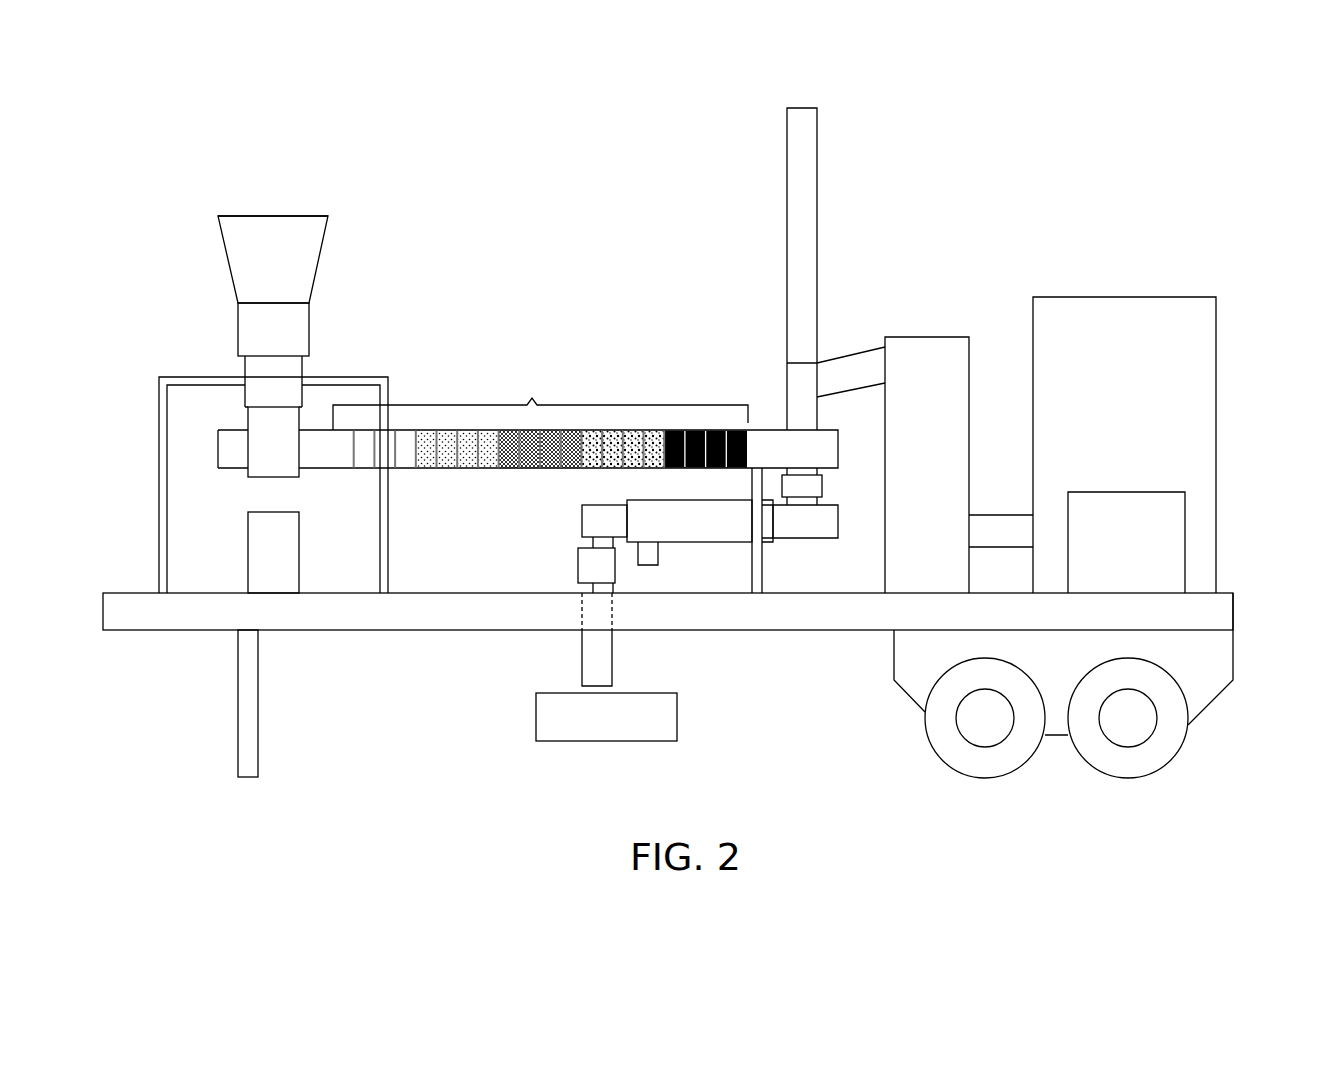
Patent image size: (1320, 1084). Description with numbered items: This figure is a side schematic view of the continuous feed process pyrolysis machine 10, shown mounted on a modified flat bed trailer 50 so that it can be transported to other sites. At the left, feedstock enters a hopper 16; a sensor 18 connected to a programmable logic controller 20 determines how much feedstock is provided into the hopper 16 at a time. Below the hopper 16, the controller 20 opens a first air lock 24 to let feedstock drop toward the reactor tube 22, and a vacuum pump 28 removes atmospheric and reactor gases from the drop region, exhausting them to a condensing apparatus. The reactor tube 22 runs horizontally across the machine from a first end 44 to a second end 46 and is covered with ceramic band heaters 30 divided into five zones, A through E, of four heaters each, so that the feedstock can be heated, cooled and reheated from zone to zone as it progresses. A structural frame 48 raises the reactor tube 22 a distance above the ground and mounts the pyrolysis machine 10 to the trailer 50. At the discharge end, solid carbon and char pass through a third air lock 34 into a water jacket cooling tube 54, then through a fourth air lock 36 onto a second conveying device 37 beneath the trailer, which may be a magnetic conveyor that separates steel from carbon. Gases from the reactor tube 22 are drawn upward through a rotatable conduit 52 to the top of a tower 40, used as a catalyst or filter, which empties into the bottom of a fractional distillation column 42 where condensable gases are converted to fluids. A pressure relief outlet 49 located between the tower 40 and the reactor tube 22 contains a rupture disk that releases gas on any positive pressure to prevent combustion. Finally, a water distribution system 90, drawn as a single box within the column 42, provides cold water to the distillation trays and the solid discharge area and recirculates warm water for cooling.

The continuous feed process pyrolysis machine 10 is at (649, 140).
The hopper 16 is at (296, 264).
The sensor 18 is at (228, 235).
The programmable logic controller 20 is at (278, 582).
The reactor tube 22 is at (769, 435).
The first air lock 24 is at (245, 328).
The vacuum pump 28 is at (218, 448).
The ceramic band heaters 30 is at (540, 401).
The third air lock 34 is at (818, 488).
The fourth air lock 36 is at (586, 564).
The second conveying device 37 is at (575, 718).
The tower 40 is at (928, 342).
The fractional distillation column 42 is at (1125, 297).
The first end 44 is at (132, 622).
The second end 46 is at (1227, 612).
The structural frame 48 is at (159, 542).
The pressure relief outlet 49 is at (798, 190).
The flat bed trailer 50 is at (746, 620).
The conduit 52 is at (848, 362).
The water jacket cooling tube 54 is at (700, 542).
The water distribution system 90 is at (1120, 528).